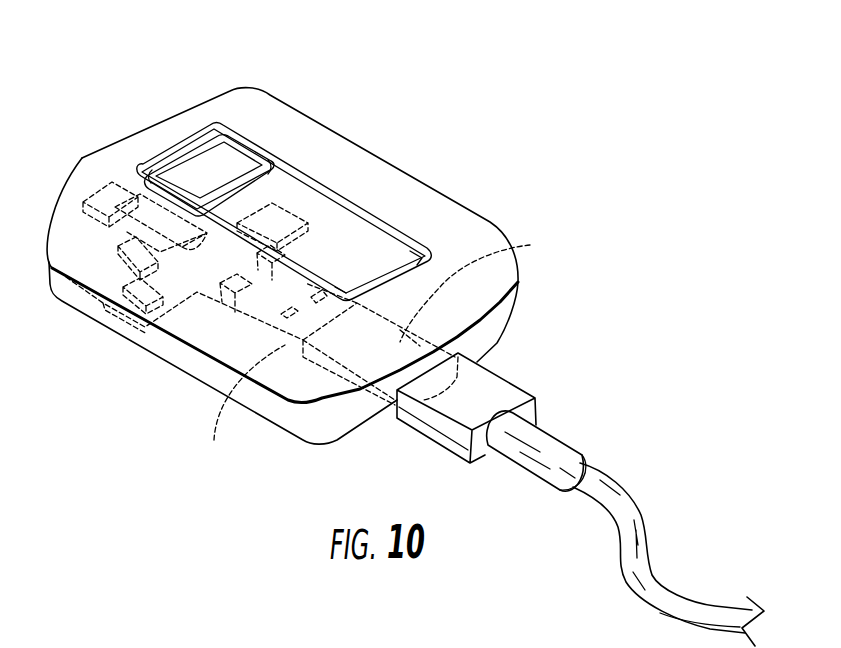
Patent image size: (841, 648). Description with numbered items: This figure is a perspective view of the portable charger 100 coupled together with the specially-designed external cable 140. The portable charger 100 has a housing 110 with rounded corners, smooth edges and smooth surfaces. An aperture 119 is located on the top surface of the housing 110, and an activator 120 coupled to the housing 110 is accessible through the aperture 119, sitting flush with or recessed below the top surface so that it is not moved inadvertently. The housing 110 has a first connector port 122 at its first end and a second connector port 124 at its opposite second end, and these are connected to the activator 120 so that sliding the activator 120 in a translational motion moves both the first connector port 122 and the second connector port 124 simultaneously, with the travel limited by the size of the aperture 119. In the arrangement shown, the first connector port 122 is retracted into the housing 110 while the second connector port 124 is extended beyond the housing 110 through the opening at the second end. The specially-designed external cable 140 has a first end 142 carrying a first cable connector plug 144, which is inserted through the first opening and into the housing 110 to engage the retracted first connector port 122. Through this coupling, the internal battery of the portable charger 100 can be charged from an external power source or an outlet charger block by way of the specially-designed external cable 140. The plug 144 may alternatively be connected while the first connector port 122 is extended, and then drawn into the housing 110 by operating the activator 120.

The portable charger 100 is at (435, 125).
The housing 110 is at (146, 128).
The aperture 119 is at (282, 195).
The activator 120 is at (199, 150).
The second connector port 124 is at (100, 195).
The first end 142 is at (530, 245).
The first connector port 122 is at (214, 440).
The first cable connector plug 144 is at (231, 416).
The specially-designed external cable 140 is at (618, 409).